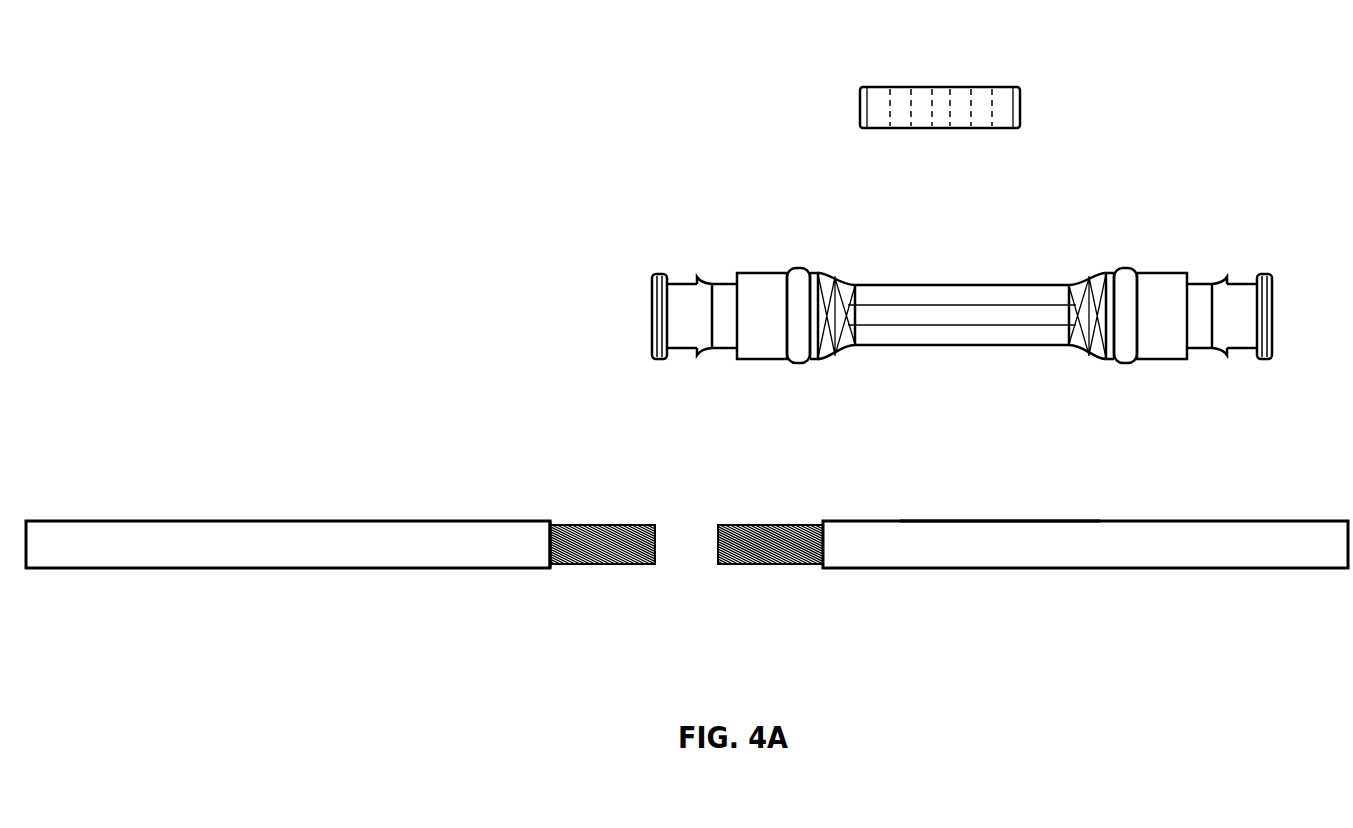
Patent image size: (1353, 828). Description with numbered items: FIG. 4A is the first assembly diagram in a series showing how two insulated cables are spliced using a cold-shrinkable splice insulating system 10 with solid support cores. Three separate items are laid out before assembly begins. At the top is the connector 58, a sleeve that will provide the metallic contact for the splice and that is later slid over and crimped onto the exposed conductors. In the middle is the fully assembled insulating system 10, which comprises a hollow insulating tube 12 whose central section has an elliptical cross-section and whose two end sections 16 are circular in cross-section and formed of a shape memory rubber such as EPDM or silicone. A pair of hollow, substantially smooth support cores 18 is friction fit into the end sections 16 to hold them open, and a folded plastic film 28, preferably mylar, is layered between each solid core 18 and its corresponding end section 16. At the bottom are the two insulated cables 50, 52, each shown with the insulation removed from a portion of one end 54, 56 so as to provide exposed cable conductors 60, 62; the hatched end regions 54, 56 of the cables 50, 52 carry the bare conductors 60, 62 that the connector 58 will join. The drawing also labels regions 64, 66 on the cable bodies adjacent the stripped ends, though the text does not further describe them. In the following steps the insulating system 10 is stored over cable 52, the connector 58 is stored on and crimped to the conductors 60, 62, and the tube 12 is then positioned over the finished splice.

The insulating system 10 is at (1040, 225).
The insulating tube 12 is at (907, 285).
The end sections 16 is at (758, 272).
The support cores 18 is at (666, 273).
The film 28 is at (705, 279).
The insulated cable 50 is at (352, 520).
The insulated cable 52 is at (1082, 569).
The end of cable 54 is at (573, 522).
The end of cable 56 is at (783, 524).
The connector 58 is at (925, 87).
The exposed cable conductor 60 is at (600, 566).
The exposed cable conductor 62 is at (772, 566).
The end face of first bar 64 is at (502, 520).
The upper surface of second bar 66 is at (992, 520).